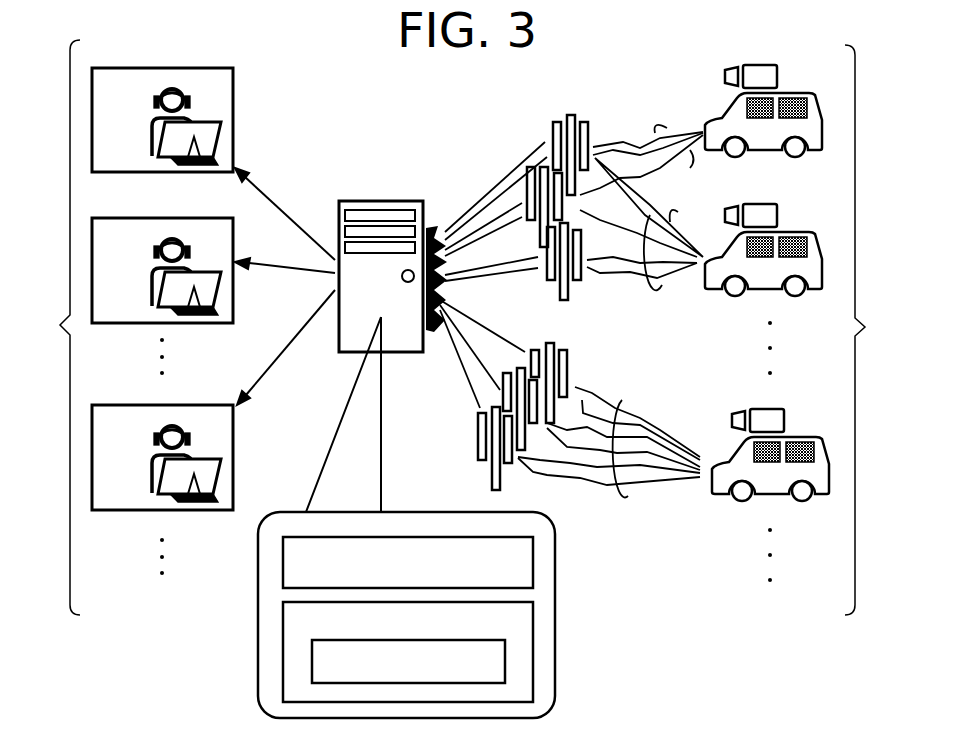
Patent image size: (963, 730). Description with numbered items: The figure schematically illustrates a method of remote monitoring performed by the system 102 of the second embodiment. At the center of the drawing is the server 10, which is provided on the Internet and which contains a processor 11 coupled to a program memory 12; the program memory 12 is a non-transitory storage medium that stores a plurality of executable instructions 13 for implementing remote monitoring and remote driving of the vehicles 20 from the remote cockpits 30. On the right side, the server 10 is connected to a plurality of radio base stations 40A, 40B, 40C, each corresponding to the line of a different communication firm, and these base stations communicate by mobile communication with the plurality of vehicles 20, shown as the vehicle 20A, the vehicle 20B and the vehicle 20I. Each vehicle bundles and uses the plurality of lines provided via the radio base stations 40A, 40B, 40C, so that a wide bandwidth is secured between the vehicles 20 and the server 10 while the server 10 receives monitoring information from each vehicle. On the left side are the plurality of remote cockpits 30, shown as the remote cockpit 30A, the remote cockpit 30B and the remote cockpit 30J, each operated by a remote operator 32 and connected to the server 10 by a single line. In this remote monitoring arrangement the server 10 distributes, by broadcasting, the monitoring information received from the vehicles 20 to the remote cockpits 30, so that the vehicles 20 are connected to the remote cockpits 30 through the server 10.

The system 102 is at (390, 126).
The server 10 is at (380, 201).
The processor 11 is at (522, 537).
The program memory 12 is at (522, 602).
The instructions 13 is at (505, 650).
The vehicles 20 is at (807, 330).
The vehicle 20A is at (770, 93).
The vehicle 20B is at (770, 232).
The vehicle 20I is at (780, 437).
The remote cockpits 30 is at (126, 323).
The remote cockpit 30A is at (162, 68).
The remote cockpit 30B is at (162, 218).
The remote cockpit 30J is at (162, 405).
The remote operator 32 is at (152, 132).
The radio base station 40A is at (568, 115).
The radio base station 40B is at (530, 167).
The radio base station 40C is at (582, 283).